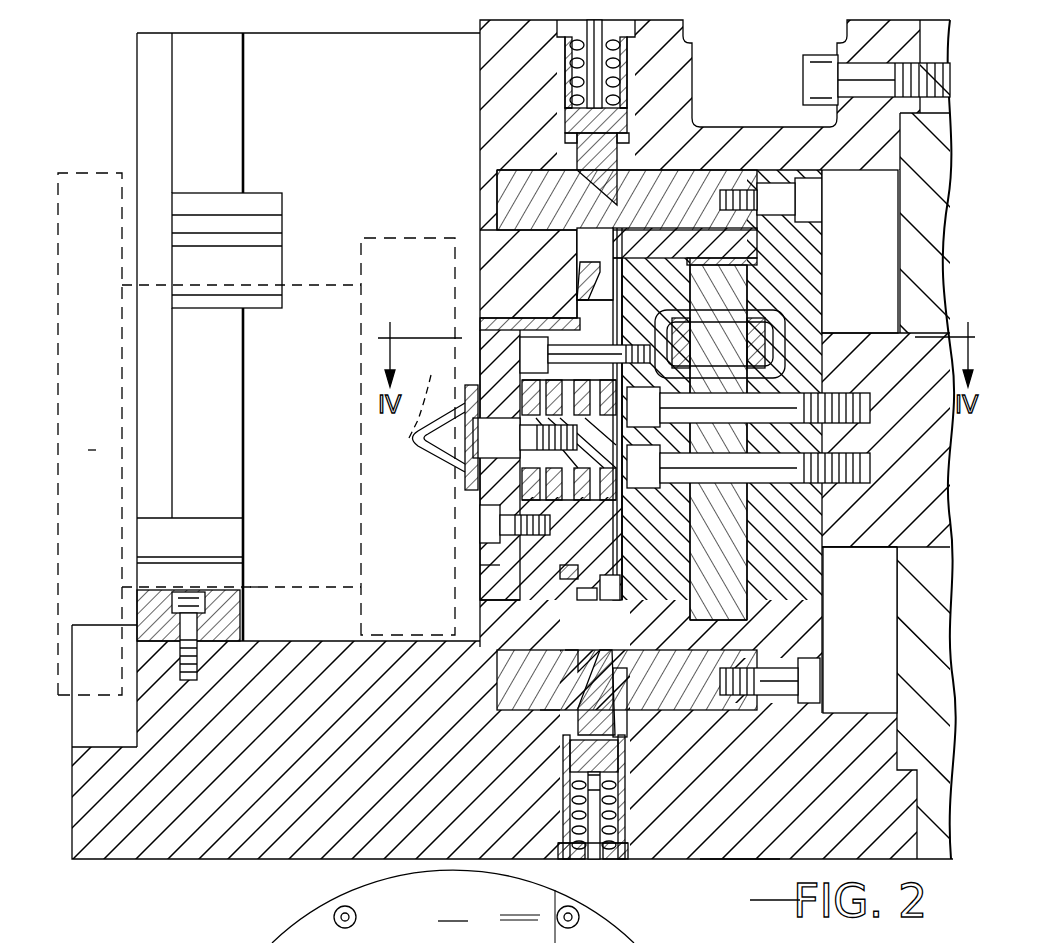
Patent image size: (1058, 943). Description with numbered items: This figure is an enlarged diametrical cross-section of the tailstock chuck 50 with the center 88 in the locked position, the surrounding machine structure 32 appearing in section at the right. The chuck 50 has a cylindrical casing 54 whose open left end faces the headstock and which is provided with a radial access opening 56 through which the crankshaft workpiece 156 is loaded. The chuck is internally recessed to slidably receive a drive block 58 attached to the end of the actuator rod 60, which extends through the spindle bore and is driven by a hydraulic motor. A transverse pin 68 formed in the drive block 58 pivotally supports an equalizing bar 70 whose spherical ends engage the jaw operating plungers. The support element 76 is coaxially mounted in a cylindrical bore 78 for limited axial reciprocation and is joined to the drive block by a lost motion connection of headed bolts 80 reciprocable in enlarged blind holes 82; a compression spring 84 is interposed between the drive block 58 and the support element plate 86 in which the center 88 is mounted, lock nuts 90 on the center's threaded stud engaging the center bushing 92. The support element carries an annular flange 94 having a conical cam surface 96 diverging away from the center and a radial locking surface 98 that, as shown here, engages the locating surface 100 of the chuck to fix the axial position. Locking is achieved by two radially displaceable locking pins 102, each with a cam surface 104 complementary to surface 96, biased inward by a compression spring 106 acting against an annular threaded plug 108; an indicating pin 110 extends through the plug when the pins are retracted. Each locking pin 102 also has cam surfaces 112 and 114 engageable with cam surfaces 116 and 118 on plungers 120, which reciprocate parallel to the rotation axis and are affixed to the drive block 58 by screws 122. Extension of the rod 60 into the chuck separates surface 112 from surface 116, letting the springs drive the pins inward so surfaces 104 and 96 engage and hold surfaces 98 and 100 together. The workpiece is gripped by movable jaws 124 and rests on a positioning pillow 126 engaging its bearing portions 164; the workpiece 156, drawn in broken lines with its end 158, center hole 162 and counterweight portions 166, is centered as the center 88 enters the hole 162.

The frame 32 is at (923, 684).
The chuck 50 is at (196, 838).
The casing 54 is at (737, 870).
The access opening 56 is at (316, 45).
The drive block 58 is at (788, 580).
The actuator rod 60 is at (621, 471).
The pin 68 is at (742, 285).
The equalizing bar 70 is at (767, 340).
The support element 76 is at (580, 300).
The cylindrical bore 78 is at (487, 567).
The headed bolts 80 is at (590, 353).
The blind holes 82 is at (510, 330).
The compression spring 84 is at (593, 503).
The support element plate 86 is at (491, 338).
The center 88 is at (443, 438).
The lock nuts 90 is at (527, 428).
The center bushing 92 is at (480, 497).
The annular flange 94 is at (510, 600).
The conical cam surface 96 is at (577, 602).
The radial locking surface 98 is at (580, 287).
The locating surface 100 is at (560, 587).
The locking pins 102 is at (600, 243).
The cam surface 104 is at (610, 598).
The compression spring 106 is at (618, 815).
The annular threaded plug 108 is at (625, 858).
The indicating pin 110 is at (600, 850).
The cam surface 112 is at (573, 730).
The cam surface 114 is at (640, 710).
The cam surface 116 is at (635, 668).
The cam surface 118 is at (532, 713).
The plungers 120 is at (687, 182).
The screws 122 is at (807, 677).
The movable jaws 124 is at (285, 220).
The positioning pillow 126 is at (242, 622).
The crankshaft workpiece 156 is at (82, 160).
The end 158 is at (370, 238).
The center hole 162 is at (434, 394).
The bearing portions 164 is at (257, 587).
The counterweight portions 166 is at (90, 453).